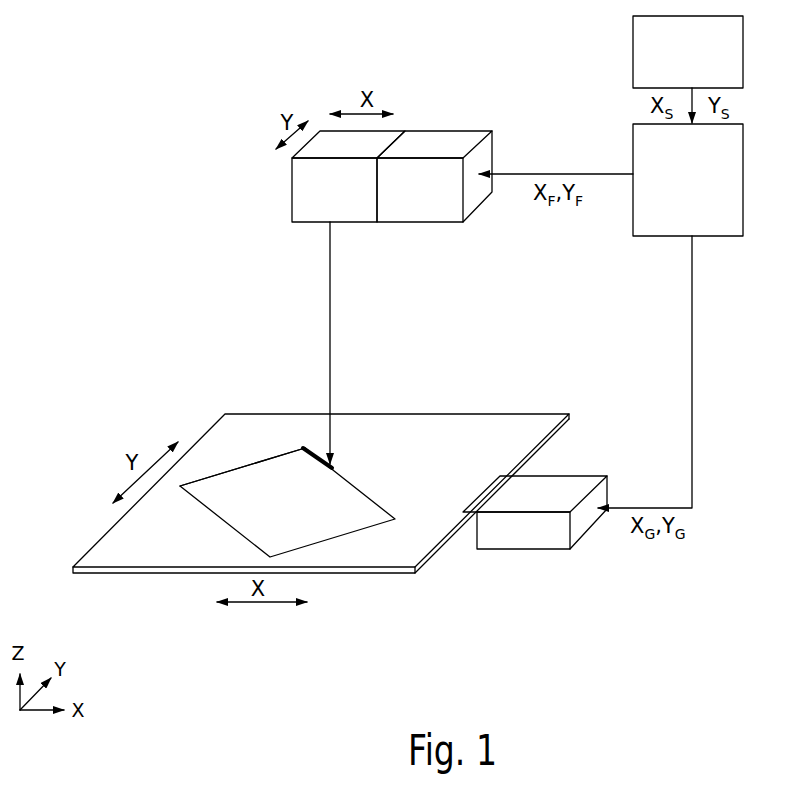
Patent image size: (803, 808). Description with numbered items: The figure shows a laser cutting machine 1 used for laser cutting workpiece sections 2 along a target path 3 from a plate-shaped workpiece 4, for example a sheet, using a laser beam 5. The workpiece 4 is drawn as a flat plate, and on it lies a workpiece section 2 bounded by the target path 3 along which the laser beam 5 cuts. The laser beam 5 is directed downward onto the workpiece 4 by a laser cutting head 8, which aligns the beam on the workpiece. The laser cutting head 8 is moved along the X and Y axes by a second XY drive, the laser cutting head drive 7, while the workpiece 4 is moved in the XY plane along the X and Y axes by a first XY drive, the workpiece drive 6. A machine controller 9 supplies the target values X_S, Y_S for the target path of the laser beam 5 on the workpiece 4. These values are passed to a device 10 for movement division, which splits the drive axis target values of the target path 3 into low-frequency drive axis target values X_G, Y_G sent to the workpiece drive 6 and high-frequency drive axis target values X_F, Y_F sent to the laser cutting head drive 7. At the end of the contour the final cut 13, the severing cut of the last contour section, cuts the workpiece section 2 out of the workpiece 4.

The laser cutting machine 1 is at (89, 139).
The workpiece section 2 is at (340, 520).
The target path 3 is at (240, 462).
The plate-shaped workpiece 4 is at (418, 538).
The laser beam 5 is at (330, 268).
The workpiece drive 6 is at (548, 533).
The laser cutting head drive 7 is at (446, 143).
The laser cutting head 8 is at (300, 186).
The machine controller 9 is at (681, 66).
The device for movement division 10 is at (677, 189).
The final cut 13 is at (297, 448).